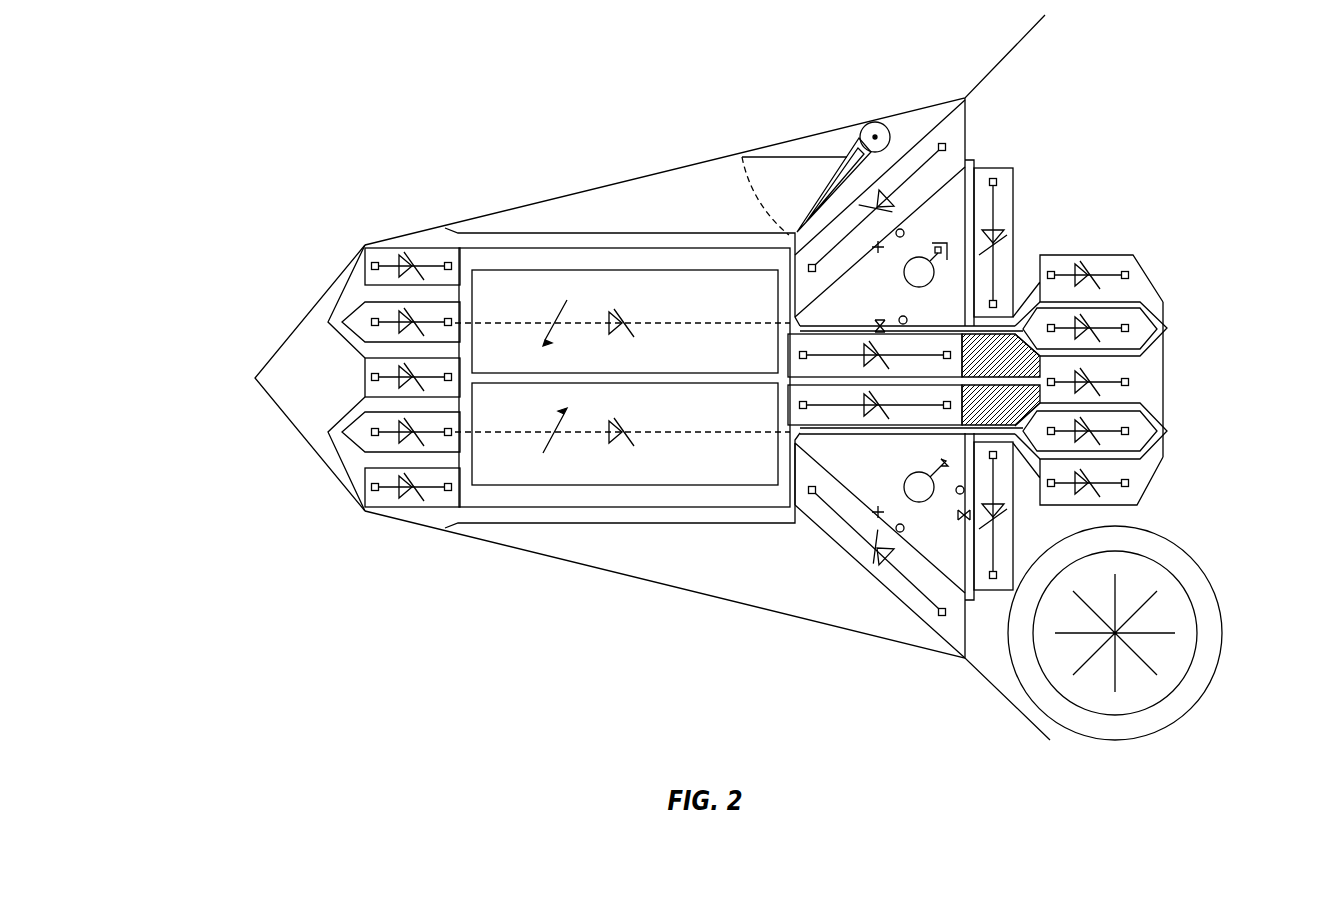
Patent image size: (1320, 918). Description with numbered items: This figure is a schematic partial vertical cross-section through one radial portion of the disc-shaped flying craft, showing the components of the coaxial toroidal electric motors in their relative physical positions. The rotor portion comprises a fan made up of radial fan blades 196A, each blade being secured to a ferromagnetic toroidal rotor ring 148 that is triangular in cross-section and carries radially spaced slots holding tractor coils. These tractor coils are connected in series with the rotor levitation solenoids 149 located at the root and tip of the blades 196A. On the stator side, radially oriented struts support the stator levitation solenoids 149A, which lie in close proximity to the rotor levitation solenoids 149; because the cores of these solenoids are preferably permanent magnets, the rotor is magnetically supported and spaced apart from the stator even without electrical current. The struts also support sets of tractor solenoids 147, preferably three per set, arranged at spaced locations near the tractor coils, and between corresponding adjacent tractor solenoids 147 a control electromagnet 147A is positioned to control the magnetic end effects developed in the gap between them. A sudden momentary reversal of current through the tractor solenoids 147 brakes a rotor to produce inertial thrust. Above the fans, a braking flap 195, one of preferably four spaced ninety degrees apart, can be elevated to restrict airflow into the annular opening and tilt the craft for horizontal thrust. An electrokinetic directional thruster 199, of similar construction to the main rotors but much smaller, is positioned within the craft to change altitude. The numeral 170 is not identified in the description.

The tractor solenoids 147 is at (340, 321).
The control electromagnet 147A is at (1157, 208).
The ferromagnetic toroidal rotor ring 148 is at (974, 221).
The rotor levitation solenoids 149 is at (350, 431).
The stator levitation solenoids 149A is at (385, 368).
The valve 170 is at (408, 508).
The braking flap 195 is at (825, 183).
The radial fan blades 196A is at (598, 292).
The electrokinetic directional thruster 199 is at (1185, 573).